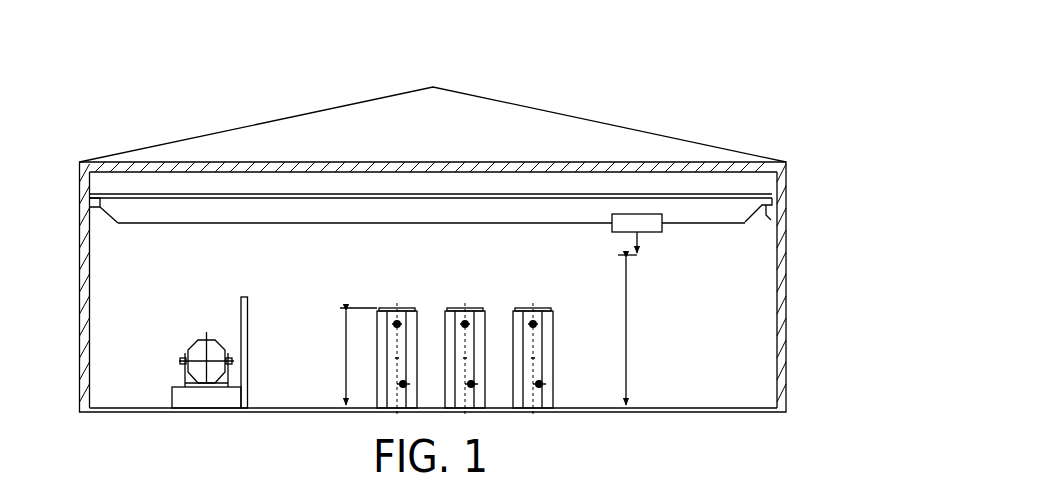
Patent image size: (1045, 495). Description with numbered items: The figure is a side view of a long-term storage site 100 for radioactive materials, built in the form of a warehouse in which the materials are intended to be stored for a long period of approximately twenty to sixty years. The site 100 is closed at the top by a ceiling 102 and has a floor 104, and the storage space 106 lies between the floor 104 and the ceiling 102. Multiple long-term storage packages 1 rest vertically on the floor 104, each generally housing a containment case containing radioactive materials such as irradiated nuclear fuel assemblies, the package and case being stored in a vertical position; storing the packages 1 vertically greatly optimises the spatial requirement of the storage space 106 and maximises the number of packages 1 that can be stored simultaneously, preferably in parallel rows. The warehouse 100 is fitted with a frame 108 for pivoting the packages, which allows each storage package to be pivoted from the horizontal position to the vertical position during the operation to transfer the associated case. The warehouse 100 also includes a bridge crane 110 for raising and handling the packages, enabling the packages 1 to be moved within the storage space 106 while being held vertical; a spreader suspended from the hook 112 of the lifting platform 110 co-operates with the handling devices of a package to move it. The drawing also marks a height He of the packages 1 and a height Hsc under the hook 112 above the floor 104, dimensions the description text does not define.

The long-term storage site 100 is at (686, 74).
The ceiling 102 is at (658, 167).
The floor 104 is at (752, 408).
The storage space 106 is at (707, 248).
The frame for pivoting the packages 108 is at (248, 302).
The bridge crane 110 is at (462, 221).
The hook 112 is at (640, 254).
The long-term storage package 1 is at (413, 306).
The fixture height He is at (345, 356).
The sensor height above floor Hsc is at (628, 335).